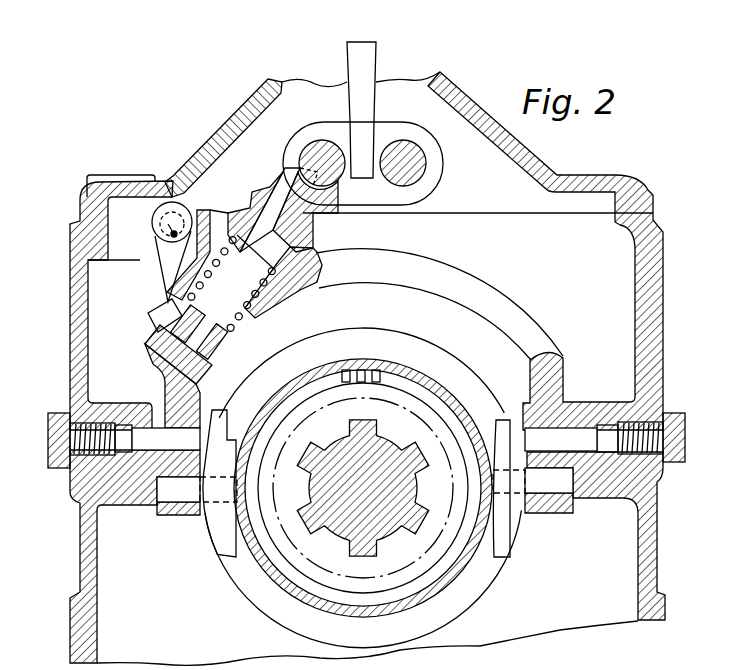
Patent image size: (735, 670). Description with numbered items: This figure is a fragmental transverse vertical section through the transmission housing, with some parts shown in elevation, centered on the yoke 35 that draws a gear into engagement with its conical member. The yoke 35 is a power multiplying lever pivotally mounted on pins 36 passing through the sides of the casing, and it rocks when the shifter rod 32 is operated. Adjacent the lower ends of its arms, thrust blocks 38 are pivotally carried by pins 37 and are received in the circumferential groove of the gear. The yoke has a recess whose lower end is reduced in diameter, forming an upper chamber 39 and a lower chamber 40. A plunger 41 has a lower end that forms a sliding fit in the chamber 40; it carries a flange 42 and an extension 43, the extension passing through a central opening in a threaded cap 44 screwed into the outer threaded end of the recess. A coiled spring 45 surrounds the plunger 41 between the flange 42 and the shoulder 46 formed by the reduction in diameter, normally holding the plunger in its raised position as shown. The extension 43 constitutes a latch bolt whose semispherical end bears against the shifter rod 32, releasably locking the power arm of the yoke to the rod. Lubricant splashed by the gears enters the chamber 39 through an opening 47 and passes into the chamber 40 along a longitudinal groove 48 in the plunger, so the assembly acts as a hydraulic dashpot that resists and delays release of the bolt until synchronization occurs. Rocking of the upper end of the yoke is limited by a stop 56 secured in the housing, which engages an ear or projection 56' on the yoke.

The shifter rod 32 is at (321, 148).
The yoke 35 is at (487, 310).
The pins 36 is at (146, 430).
The pins 37 is at (180, 496).
The thrust blocks 38 is at (222, 532).
The chamber 39 is at (252, 318).
The chamber 40 is at (205, 356).
The plunger 41 is at (175, 306).
The flange 42 is at (306, 290).
The extension 43 is at (312, 224).
The threaded cap 44 is at (258, 190).
The coiled spring 45 is at (250, 310).
The shoulder 46 is at (220, 342).
The opening 47 is at (222, 222).
The groove 48 is at (193, 323).
The stop 56 is at (155, 254).
The ear or projection 56' is at (151, 252).